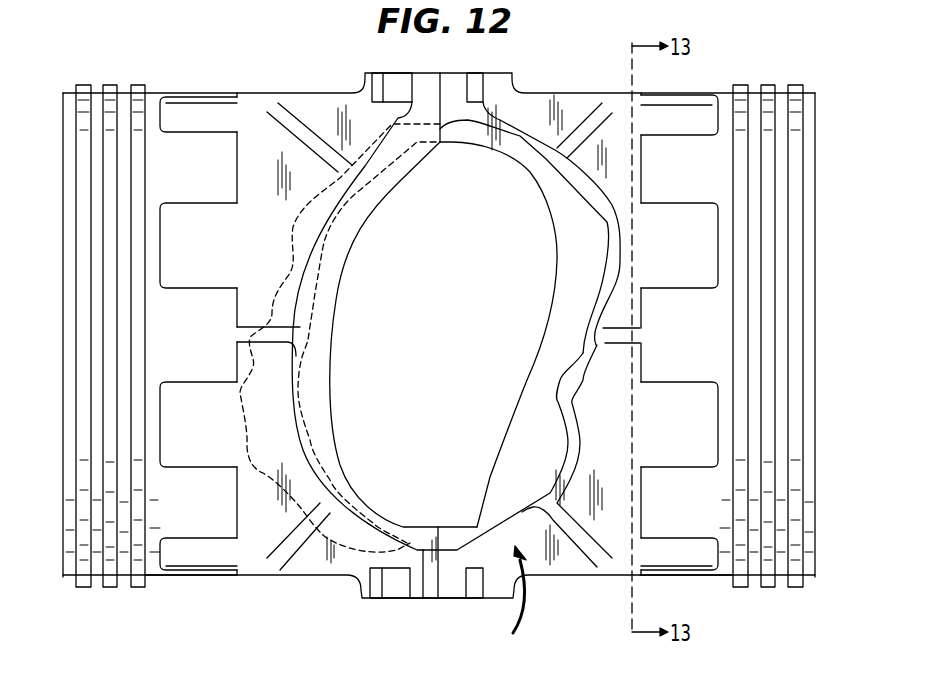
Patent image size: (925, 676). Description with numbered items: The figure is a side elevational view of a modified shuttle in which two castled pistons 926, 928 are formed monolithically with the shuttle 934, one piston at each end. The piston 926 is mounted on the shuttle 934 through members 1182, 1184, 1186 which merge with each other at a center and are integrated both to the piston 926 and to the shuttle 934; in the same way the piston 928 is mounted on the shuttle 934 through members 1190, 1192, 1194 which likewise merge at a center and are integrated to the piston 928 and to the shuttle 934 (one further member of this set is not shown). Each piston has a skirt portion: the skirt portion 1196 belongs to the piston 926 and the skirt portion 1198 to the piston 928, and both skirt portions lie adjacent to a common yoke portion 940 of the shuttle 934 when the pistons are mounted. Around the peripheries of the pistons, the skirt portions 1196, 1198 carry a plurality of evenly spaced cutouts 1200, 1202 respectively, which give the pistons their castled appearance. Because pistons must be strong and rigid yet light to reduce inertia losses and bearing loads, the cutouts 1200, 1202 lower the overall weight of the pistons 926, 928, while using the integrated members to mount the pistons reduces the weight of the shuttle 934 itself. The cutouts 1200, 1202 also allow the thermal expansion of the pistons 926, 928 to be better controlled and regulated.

The castled piston 926 is at (815, 212).
The castled piston 928 is at (63, 224).
The shuttle 934 is at (503, 604).
The common yoke portion 940 is at (460, 567).
The member 1182 is at (620, 102).
The member 1184 is at (620, 352).
The member 1186 is at (615, 572).
The member 1190 is at (250, 97).
The member 1192 is at (250, 330).
The member 1194 is at (245, 570).
The skirt portion 1196 is at (693, 578).
The skirt portion 1198 is at (193, 578).
The cutouts 1200 is at (698, 124).
The cutouts 1202 is at (181, 121).